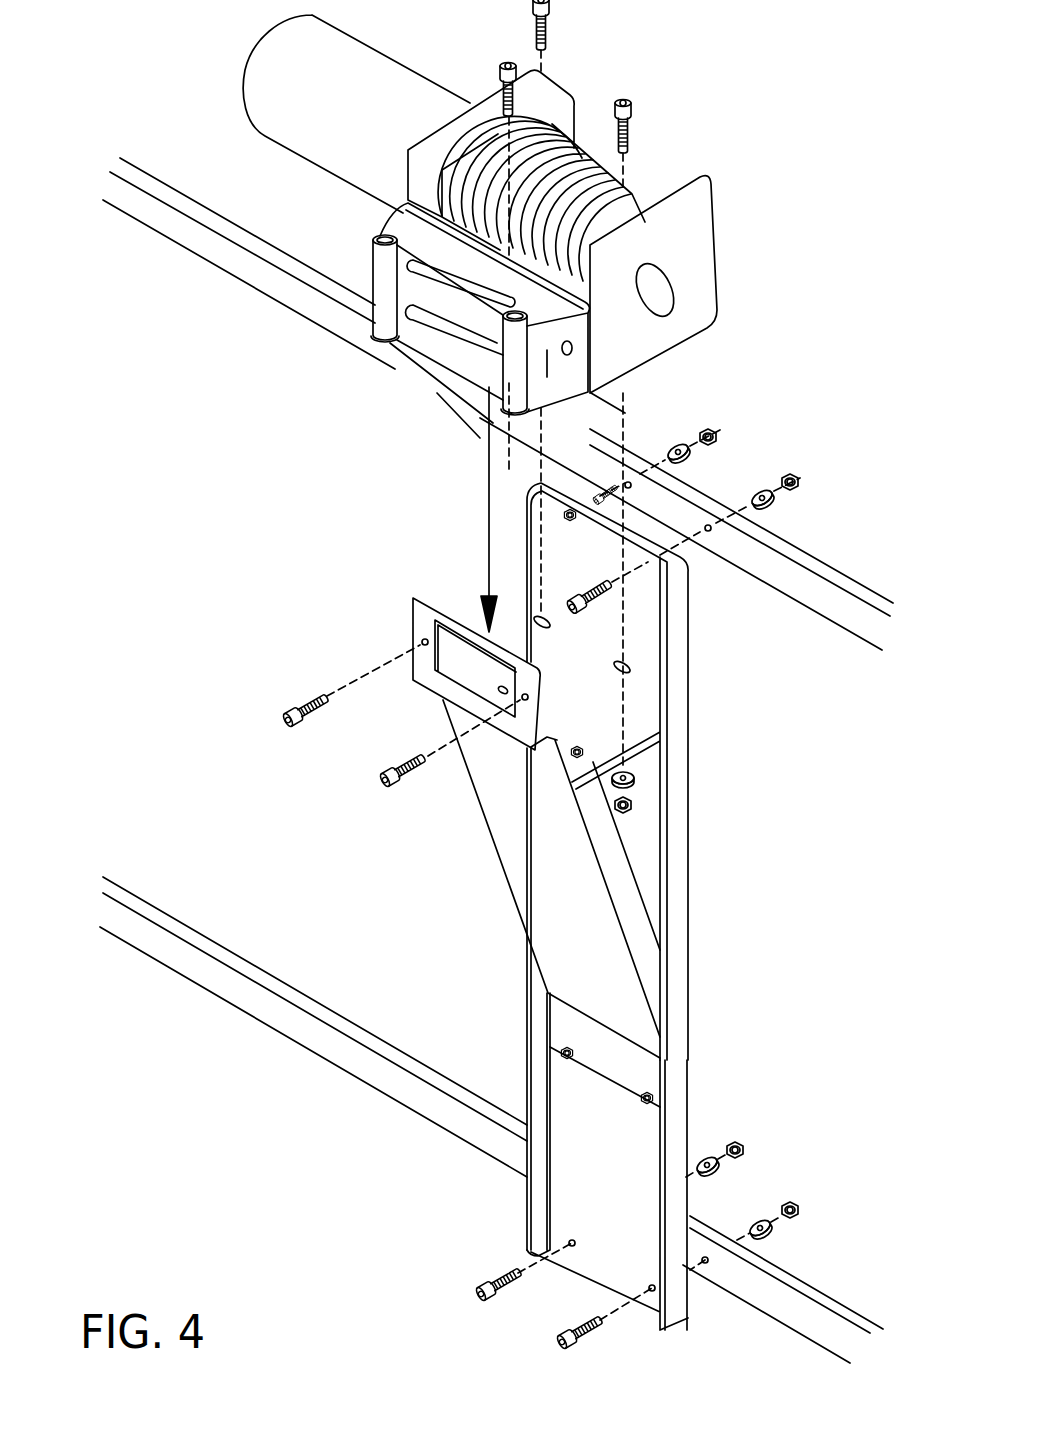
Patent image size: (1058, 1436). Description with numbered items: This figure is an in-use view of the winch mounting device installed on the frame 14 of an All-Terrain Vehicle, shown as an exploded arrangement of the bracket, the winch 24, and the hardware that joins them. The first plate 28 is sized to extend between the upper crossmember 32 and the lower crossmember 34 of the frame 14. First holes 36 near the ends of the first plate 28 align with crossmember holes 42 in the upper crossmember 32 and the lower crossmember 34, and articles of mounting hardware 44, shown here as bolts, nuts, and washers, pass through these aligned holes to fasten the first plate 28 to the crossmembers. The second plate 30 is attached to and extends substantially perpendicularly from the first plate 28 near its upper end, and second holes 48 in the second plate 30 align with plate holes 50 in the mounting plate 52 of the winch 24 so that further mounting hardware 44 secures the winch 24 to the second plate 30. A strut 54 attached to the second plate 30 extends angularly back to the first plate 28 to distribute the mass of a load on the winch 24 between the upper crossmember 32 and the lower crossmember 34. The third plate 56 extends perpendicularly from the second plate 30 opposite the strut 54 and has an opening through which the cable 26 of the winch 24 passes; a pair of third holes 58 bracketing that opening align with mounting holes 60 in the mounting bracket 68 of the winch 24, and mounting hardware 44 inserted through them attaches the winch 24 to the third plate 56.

The frame 14 is at (463, 760).
The winch 24 is at (700, 220).
The cable 26 is at (622, 192).
The first plate 28 is at (600, 1140).
The second plate 30 is at (583, 707).
The upper crossmember 32 is at (257, 283).
The lower crossmember 34 is at (152, 908).
The first holes 36 is at (652, 1288).
The crossmember holes 42 is at (636, 488).
The mounting hardware 44 is at (628, 100).
The second holes 48 is at (630, 672).
The plate holes 50 is at (672, 393).
The mounting plate 52 is at (672, 357).
The strut 54 is at (563, 872).
The third plate 56 is at (455, 598).
The third holes 58 is at (523, 698).
The mounting holes 60 is at (535, 364).
The mounting bracket 68 is at (378, 240).